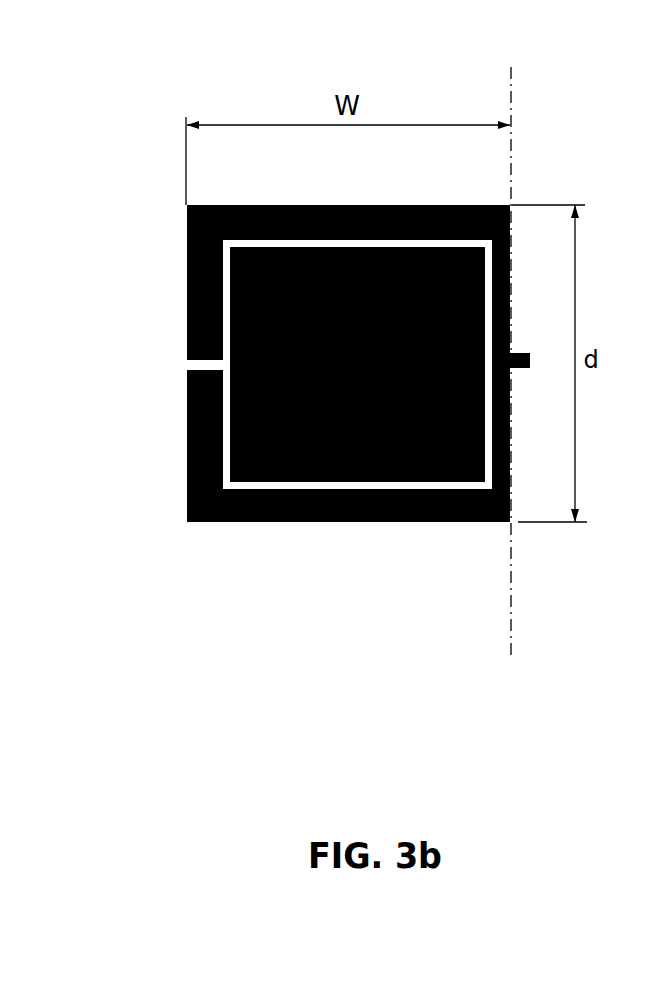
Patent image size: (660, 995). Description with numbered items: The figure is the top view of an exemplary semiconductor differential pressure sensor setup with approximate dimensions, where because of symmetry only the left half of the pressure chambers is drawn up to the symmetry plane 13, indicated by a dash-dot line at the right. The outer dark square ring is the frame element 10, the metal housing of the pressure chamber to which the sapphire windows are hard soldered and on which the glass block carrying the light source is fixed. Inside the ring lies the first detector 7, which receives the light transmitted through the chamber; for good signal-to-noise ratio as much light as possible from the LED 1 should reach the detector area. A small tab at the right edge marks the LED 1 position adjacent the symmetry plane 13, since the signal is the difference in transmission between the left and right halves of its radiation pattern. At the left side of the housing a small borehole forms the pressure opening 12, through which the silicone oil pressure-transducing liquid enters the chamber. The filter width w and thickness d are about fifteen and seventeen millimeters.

The light source, LED 1 is at (523, 372).
The first detector 7 is at (307, 418).
The frame elements 10 is at (426, 507).
The pressure opening filled with silicone oil 12 is at (188, 365).
The symmetry plane 13 is at (551, 346).